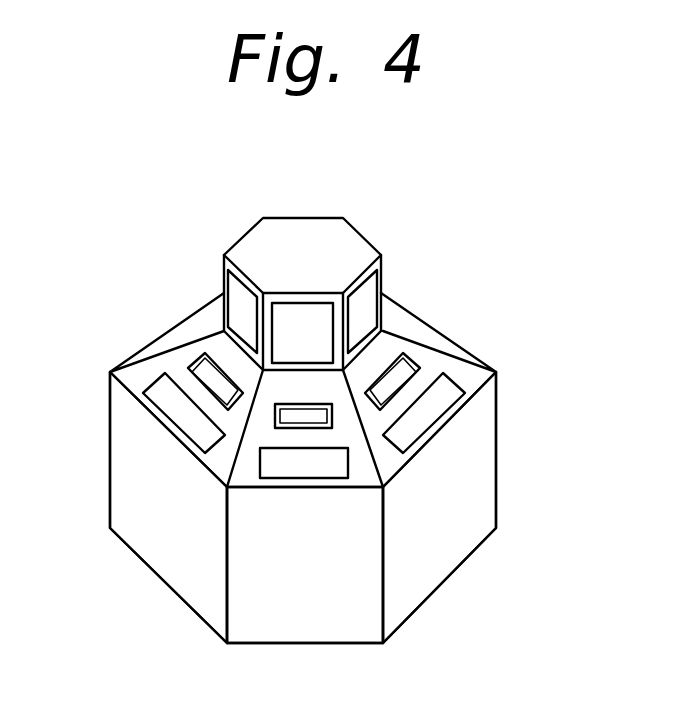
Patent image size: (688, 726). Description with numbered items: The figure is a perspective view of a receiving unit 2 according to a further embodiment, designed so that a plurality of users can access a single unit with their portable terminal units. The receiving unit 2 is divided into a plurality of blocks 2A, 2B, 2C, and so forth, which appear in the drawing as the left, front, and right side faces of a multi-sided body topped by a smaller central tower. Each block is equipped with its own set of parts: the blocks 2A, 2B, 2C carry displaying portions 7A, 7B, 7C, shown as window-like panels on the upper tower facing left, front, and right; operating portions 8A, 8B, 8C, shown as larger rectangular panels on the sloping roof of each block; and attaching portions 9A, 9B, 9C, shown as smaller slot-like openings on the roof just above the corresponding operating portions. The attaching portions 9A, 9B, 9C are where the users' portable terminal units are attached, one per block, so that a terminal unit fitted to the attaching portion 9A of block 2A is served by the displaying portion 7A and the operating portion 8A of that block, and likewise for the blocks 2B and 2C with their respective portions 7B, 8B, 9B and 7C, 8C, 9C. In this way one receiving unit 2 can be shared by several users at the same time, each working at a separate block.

The receiving unit 2 is at (202, 253).
The block 2A is at (168, 547).
The block 2B is at (303, 623).
The block 2C is at (440, 565).
The displaying portion 7A is at (245, 313).
The displaying portion 7B is at (304, 333).
The displaying portion 7C is at (360, 313).
The operating portion 8A is at (187, 415).
The operating portion 8B is at (285, 467).
The operating portion 8C is at (422, 417).
The attaching portion 9A is at (212, 380).
The attaching portion 9B is at (315, 420).
The attaching portion 9C is at (395, 380).